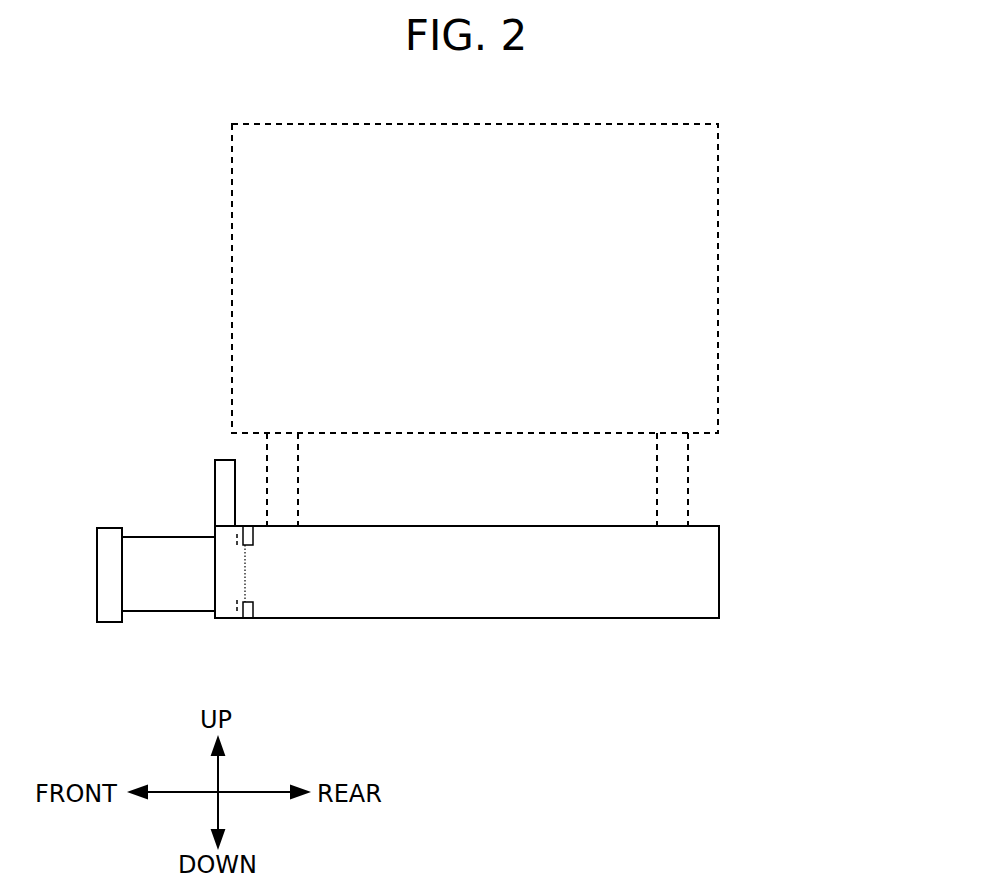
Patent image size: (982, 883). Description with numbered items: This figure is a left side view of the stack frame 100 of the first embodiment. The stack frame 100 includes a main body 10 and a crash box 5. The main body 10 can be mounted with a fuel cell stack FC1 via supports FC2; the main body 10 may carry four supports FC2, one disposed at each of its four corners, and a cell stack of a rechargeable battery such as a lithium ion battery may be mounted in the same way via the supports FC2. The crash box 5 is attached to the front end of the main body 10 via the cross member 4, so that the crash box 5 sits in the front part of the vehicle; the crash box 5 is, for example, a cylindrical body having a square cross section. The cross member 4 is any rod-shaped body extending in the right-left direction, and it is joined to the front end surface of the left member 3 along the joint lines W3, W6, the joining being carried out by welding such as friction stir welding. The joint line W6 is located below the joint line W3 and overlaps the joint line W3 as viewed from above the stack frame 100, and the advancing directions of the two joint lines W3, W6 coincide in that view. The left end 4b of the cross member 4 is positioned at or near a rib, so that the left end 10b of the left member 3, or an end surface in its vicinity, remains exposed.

The fuel cell stack FC1 is at (718, 218).
The support FC2 is at (298, 492).
The stack frame 100 is at (787, 428).
The left member 3 is at (719, 568).
The main body 10 is at (580, 525).
The left end 10b is at (484, 581).
The cross member 4 is at (224, 500).
The left end 4b is at (225, 620).
The crash box 5 is at (139, 537).
The joint line W3 is at (252, 525).
The joint line W6 is at (249, 620).